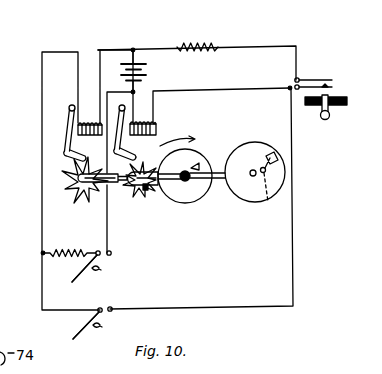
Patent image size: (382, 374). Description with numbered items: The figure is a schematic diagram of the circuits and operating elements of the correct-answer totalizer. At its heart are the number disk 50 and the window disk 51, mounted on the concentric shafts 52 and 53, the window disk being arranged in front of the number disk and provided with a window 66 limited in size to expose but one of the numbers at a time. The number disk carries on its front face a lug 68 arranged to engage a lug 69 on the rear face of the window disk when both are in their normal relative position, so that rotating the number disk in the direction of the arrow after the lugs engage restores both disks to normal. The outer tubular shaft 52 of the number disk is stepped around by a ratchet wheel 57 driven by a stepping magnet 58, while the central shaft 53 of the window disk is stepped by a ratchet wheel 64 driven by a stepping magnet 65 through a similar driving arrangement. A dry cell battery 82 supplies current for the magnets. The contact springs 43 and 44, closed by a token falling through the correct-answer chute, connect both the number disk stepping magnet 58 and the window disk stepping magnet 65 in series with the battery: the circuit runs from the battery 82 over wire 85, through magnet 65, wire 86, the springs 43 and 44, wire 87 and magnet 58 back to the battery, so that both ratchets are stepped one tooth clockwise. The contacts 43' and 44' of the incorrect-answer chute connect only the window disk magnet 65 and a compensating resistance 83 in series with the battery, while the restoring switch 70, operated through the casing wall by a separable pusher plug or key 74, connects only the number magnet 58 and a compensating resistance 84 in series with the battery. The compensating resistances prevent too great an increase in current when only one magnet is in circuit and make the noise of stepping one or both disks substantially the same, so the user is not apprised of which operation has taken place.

The contact spring 43 is at (74, 325).
The contact spring 43' is at (72, 268).
The contact spring 44 is at (106, 323).
The contact spring 44' is at (103, 266).
The number disk 50 is at (195, 203).
The window disk 51 is at (253, 198).
The outer tubular shaft 52 is at (146, 191).
The central shaft 53 is at (104, 186).
The ratchet wheel 57 is at (125, 165).
The stepping magnet 58 is at (160, 123).
The ratchet wheel 64 is at (72, 192).
The stepping magnet 65 is at (92, 124).
The window 66 is at (273, 153).
The lug 68 is at (194, 165).
The lug 69 is at (272, 197).
The restoring switch 70 is at (336, 80).
The pusher plug 74 is at (331, 110).
The dry cell battery 82 is at (147, 79).
The compensating resistance 83 is at (65, 252).
The compensating resistance 84 is at (197, 43).
The wire 85 is at (115, 48).
The wire 86 is at (41, 154).
The wire 87 is at (293, 201).